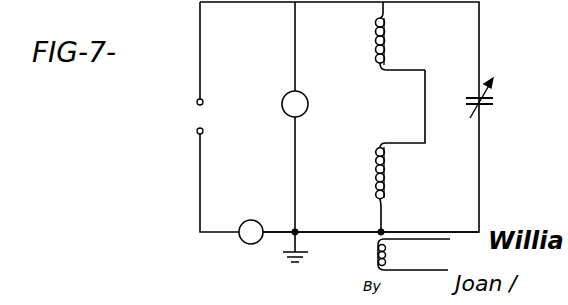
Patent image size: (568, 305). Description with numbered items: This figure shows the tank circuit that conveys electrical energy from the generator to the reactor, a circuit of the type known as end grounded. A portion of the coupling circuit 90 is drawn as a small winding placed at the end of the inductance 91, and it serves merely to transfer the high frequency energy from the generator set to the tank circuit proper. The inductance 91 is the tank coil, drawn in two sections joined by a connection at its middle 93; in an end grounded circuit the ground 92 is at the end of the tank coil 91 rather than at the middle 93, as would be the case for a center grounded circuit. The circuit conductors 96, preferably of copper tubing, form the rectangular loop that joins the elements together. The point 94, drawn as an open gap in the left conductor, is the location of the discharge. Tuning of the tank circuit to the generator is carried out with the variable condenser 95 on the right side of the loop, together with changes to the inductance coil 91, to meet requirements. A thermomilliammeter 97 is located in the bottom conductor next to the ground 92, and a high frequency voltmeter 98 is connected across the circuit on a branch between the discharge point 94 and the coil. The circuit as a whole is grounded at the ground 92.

The coupling circuit portion 90 is at (376, 258).
The inductance 91 is at (391, 44).
The ground 92 is at (287, 260).
The middle of the tank coil 93 is at (443, 114).
The point of discharge 94 is at (193, 117).
The variable condenser 95 is at (497, 101).
The circuit conductors 96 is at (331, 228).
The thermomilliammeter 97 is at (263, 207).
The high frequency voltmeter 98 is at (309, 105).